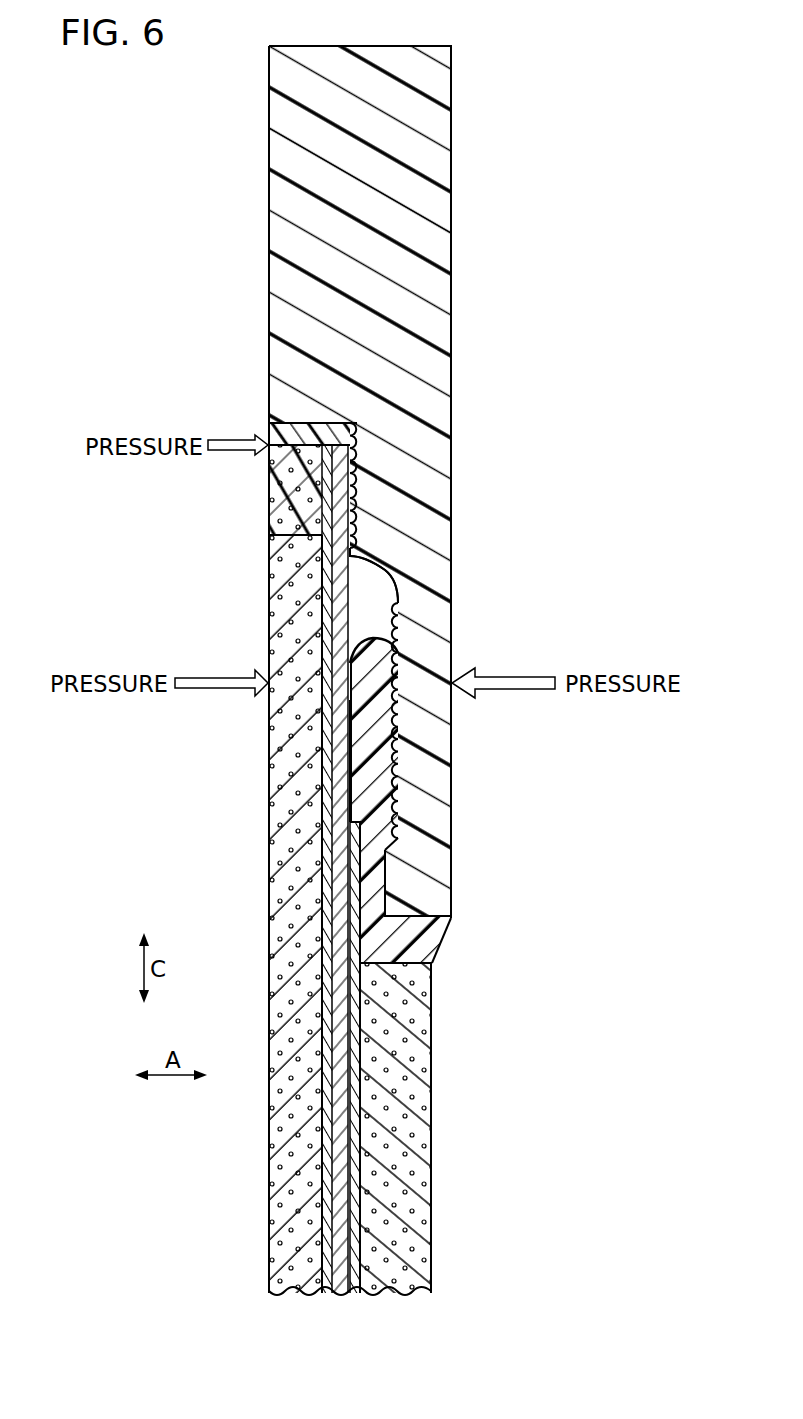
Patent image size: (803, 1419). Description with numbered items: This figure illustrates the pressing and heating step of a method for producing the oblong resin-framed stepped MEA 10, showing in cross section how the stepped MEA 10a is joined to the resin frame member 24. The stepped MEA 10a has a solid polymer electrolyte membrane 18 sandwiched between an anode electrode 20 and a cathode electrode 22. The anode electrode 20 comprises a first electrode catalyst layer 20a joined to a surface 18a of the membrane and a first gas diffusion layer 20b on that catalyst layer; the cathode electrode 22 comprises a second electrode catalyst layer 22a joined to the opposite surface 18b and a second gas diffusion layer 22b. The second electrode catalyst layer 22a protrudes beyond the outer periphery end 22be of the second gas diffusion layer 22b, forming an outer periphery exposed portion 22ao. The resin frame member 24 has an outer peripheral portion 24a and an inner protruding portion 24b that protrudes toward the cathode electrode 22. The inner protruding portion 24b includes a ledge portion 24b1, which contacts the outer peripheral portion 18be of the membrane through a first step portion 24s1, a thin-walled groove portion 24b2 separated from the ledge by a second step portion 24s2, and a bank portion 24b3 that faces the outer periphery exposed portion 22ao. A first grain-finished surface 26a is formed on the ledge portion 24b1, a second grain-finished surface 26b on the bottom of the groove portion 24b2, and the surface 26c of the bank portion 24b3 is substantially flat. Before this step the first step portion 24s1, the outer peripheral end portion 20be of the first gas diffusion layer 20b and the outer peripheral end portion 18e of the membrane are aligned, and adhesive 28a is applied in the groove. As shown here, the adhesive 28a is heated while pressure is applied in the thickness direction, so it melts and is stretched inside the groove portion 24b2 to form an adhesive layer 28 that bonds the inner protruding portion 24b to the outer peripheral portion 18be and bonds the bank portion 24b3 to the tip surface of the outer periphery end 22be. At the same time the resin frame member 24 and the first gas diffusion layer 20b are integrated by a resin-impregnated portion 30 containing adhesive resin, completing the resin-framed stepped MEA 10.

The resin-framed stepped MEA 10 is at (224, 112).
The stepped MEA 10a is at (442, 1262).
The solid polymer electrolyte membrane 18 is at (352, 1100).
The surface of the solid polymer electrolyte membrane 18a is at (330, 1126).
The surface of the solid polymer electrolyte membrane 18b is at (356, 1150).
The outer peripheral end portion of the solid polymer electrolyte membrane 18e is at (353, 428).
The outer peripheral portion of the solid polymer electrolyte membrane 18be is at (355, 599).
The anode electrode 20 is at (187, 1230).
The first electrode catalyst layer 20a is at (322, 1176).
The first gas diffusion layer 20b is at (290, 1228).
The outer peripheral end portion of the first gas diffusion layer 20be is at (320, 423).
The cathode electrode 22 is at (495, 1245).
The second electrode catalyst layer 22a is at (358, 1188).
The second gas diffusion layer 22b is at (408, 1240).
The outer periphery exposed portion 22ao is at (385, 840).
The outer periphery end of the second gas diffusion layer 22be is at (397, 963).
The resin frame member 24 is at (458, 81).
The outer peripheral portion 24a is at (435, 128).
The inner protruding portion 24b is at (522, 478).
The ledge portion 24b1 is at (425, 493).
The groove portion 24b2 is at (420, 746).
The bank portion 24b3 is at (420, 883).
The first step portion 24s1 is at (300, 431).
The second step portion 24s2 is at (348, 592).
The first grain-finished surface 26a is at (322, 513).
The second grain-finished surface 26b is at (385, 778).
The surface of the bank portion 26c is at (375, 892).
The adhesive layer 28 is at (375, 719).
The adhesive 28a is at (375, 719).
The resin-impregnated portion 30 is at (300, 518).